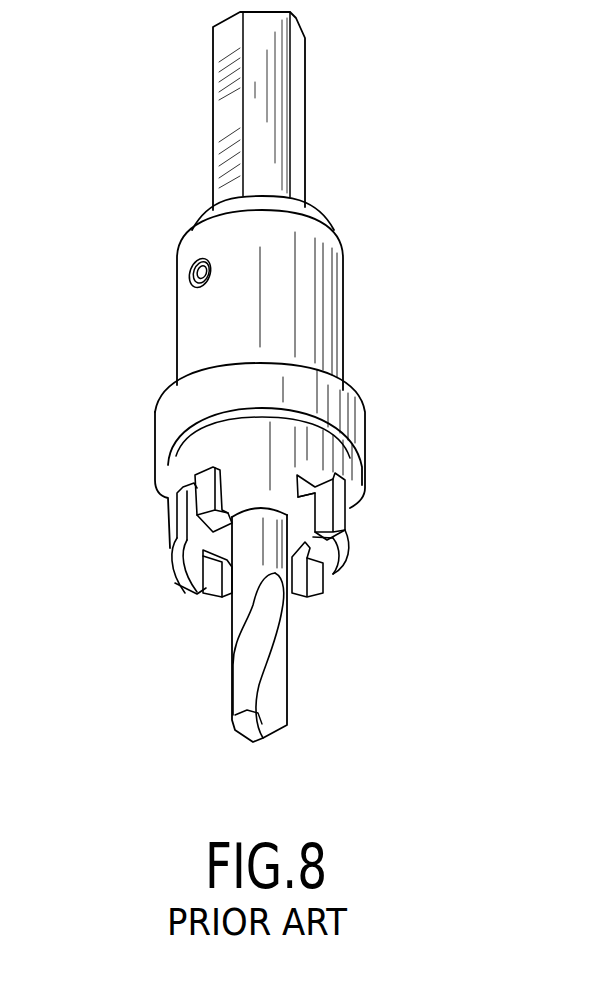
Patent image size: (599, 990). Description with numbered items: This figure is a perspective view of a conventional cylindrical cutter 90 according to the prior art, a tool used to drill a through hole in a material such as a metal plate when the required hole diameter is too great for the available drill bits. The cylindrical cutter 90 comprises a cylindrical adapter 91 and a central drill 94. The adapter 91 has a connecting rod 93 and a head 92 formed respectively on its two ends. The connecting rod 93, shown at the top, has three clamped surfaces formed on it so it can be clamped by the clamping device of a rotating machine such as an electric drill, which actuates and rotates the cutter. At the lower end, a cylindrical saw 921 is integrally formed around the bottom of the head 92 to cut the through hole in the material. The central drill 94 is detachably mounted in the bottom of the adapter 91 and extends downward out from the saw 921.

The cylindrical cutter 90 is at (332, 112).
The cylindrical adapter 91 is at (193, 325).
The head 92 is at (168, 421).
The cylindrical saw 921 is at (170, 528).
The connecting rod 93 is at (227, 127).
The central drill 94 is at (245, 700).